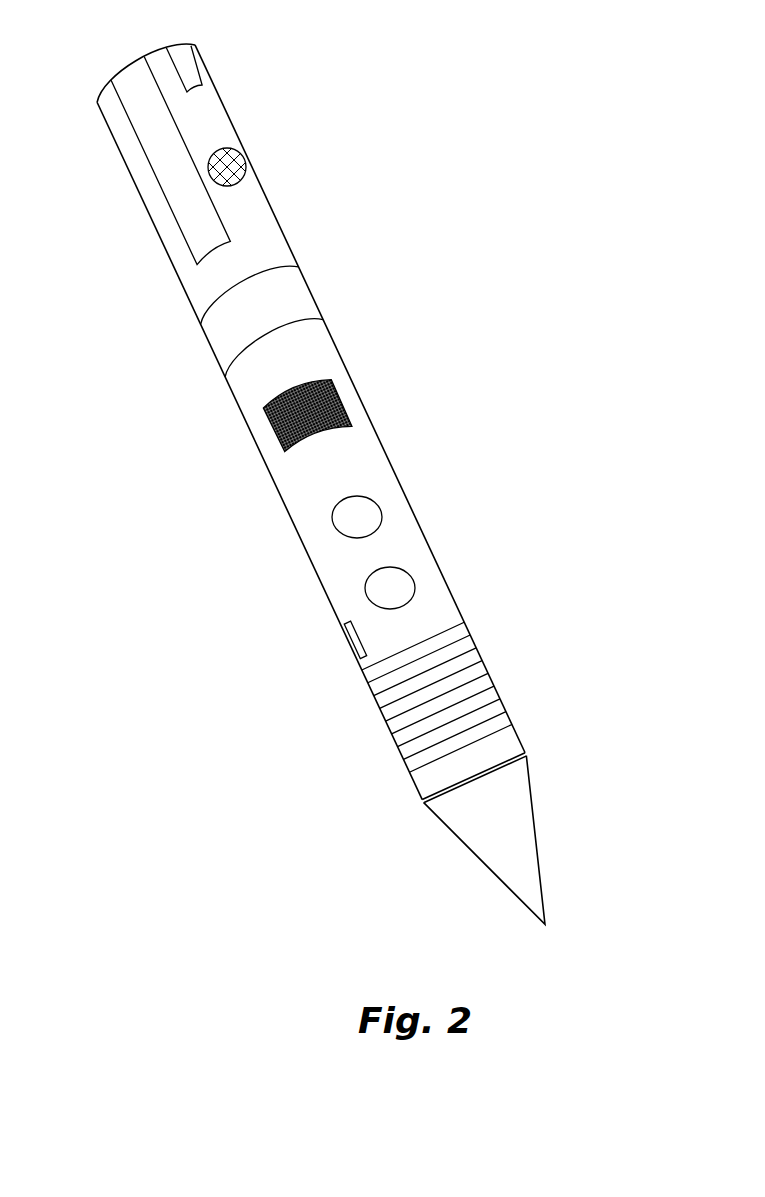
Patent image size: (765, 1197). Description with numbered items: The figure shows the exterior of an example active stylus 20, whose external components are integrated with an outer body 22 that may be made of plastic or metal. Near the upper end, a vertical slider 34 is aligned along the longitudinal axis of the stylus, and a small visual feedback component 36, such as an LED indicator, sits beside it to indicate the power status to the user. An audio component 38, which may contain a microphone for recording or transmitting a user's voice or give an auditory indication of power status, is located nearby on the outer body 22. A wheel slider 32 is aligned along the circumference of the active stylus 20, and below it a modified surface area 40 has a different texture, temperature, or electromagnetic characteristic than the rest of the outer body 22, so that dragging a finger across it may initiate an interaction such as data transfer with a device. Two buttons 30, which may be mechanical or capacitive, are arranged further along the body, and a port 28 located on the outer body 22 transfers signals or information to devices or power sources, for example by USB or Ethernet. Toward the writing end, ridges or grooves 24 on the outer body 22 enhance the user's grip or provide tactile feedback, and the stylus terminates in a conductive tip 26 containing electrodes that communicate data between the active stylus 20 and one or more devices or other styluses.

The active stylus 20 is at (487, 307).
The outer body 22 is at (397, 465).
The ridges or grooves 24 is at (468, 672).
The tip 26 is at (537, 832).
The port 28 is at (355, 640).
The buttons 30 is at (360, 587).
The wheel slider 32 is at (232, 335).
The vertical slider 34 is at (158, 142).
The visual feedback component 36 is at (180, 63).
The audio component 38 is at (233, 158).
The modified surface area 40 is at (310, 403).